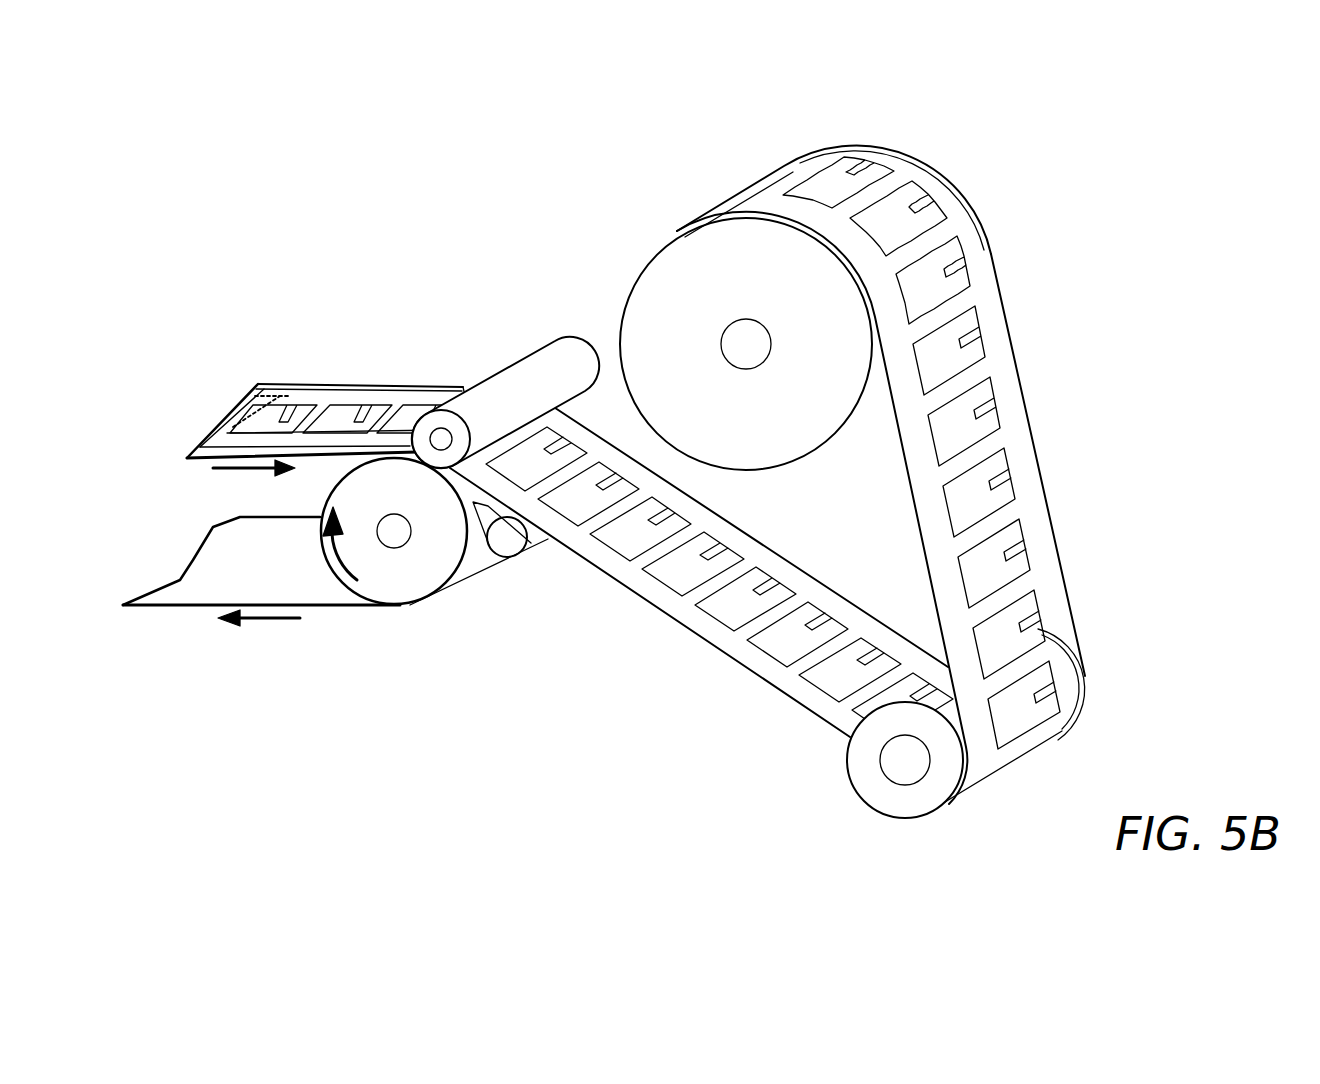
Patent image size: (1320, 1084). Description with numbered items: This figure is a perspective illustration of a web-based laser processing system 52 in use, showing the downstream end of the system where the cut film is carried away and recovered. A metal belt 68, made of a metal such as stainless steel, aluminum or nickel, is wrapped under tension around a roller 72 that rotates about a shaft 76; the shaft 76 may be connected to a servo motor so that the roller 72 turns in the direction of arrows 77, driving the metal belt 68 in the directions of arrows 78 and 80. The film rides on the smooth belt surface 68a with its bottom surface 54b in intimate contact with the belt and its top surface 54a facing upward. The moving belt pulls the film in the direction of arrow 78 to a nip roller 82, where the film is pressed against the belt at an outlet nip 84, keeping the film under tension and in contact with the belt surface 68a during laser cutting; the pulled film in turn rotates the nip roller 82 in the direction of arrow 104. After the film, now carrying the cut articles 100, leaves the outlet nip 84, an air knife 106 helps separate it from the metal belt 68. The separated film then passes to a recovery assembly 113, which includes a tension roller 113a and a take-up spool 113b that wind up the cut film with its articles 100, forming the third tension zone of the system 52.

The laser processing system 52 is at (250, 750).
The top surface 54a is at (625, 580).
The bottom surface 54b is at (1035, 524).
The metal belt 68 is at (350, 606).
The belt surface 68a is at (350, 390).
The roller 72 is at (412, 593).
The shaft 76 is at (403, 530).
The arrows 77 is at (332, 547).
The arrow 78 is at (238, 470).
The arrow 80 is at (277, 620).
The nip roller 82 is at (543, 356).
The outlet nip 84 is at (452, 386).
The articles 100 is at (993, 411).
The arrow 104 is at (510, 240).
The air knife 106 is at (532, 540).
The recovery assembly 113 is at (993, 201).
The tension roller 113a is at (880, 790).
The take-up spool 113b is at (693, 256).